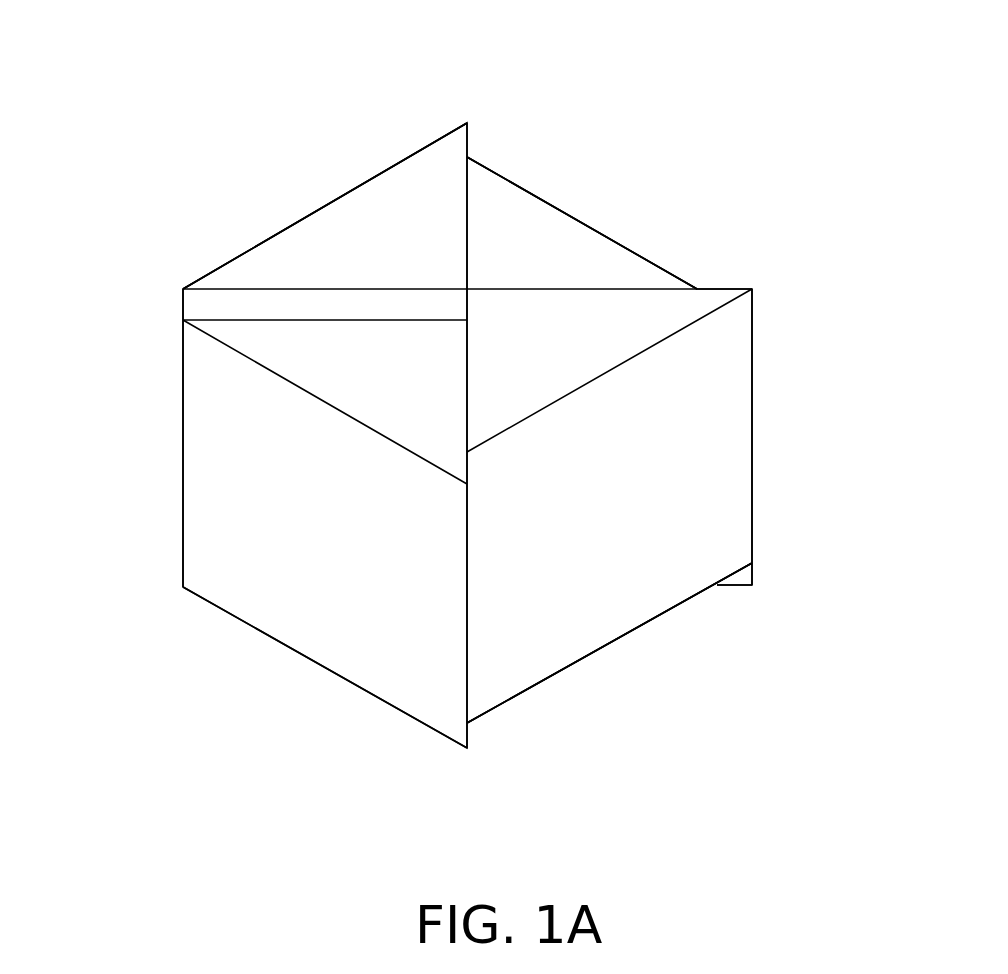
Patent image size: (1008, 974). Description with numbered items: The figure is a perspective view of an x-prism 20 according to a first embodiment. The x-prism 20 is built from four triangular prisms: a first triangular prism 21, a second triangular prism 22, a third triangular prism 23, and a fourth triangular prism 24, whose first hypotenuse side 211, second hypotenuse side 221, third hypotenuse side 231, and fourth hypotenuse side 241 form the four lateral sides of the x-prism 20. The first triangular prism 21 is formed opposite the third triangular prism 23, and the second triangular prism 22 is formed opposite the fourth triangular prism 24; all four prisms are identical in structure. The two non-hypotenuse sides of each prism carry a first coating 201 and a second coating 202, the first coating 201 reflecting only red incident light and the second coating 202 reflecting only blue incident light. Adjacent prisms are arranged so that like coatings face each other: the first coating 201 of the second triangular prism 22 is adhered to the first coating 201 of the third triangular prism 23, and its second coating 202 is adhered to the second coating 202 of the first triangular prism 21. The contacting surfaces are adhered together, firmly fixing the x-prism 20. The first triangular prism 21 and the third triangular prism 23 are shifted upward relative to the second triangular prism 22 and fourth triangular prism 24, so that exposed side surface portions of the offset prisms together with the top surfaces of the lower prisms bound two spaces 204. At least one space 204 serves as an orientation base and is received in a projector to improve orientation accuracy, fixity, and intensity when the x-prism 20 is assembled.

The x-prism 20 is at (541, 92).
The first coating 201 is at (467, 222).
The second coating 202 is at (273, 285).
The spaces 204 is at (230, 303).
The first triangular prism 21 is at (577, 340).
The first hypotenuse side 211 is at (703, 462).
The second triangular prism 22 is at (555, 230).
The second hypotenuse side 221 is at (520, 183).
The third triangular prism 23 is at (367, 230).
The third hypotenuse side 231 is at (290, 222).
The fourth triangular prism 24 is at (305, 365).
The fourth hypotenuse side 241 is at (246, 473).